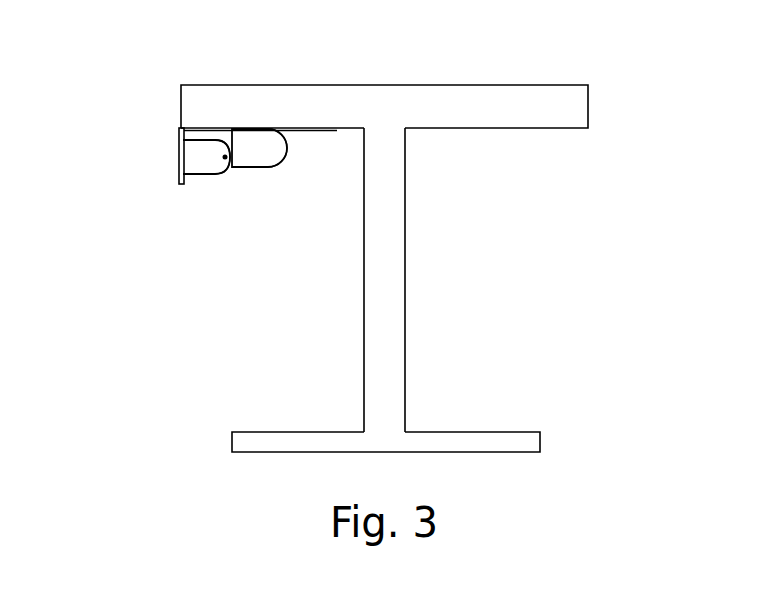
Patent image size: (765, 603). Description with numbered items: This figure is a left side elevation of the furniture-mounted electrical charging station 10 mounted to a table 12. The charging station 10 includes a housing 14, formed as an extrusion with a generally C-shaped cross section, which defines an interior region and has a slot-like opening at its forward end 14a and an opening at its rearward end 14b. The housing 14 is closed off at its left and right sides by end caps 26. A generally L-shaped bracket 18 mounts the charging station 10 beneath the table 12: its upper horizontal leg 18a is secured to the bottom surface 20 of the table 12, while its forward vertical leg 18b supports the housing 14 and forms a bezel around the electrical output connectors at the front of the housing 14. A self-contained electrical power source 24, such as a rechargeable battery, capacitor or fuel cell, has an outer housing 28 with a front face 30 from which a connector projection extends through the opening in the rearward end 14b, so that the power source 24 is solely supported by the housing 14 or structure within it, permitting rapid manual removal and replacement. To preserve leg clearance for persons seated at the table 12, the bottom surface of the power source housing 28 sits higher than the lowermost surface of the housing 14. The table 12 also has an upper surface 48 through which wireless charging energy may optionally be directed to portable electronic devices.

The furniture-mounted electrical charging station 10 is at (202, 168).
The table 12 is at (412, 227).
The housing 14 is at (178, 168).
The forward end of housing 14a is at (191, 202).
The rearward end of housing 14b is at (233, 189).
The L-shaped bracket 18 is at (214, 178).
The upper horizontal leg 18a is at (337, 129).
The forward vertical leg 18b is at (180, 181).
The bottom surface of table 20 is at (352, 144).
The self-contained electrical power source 24 is at (272, 205).
The end caps 26 is at (205, 160).
The outer housing of power source 28 is at (288, 150).
The front face 30 is at (216, 128).
The upper surface of table 48 is at (352, 75).